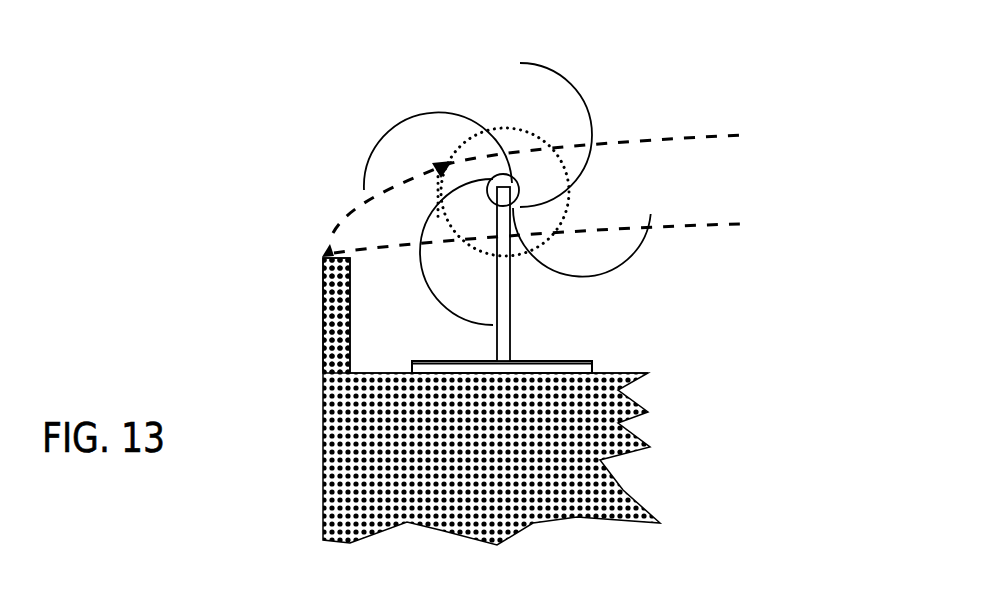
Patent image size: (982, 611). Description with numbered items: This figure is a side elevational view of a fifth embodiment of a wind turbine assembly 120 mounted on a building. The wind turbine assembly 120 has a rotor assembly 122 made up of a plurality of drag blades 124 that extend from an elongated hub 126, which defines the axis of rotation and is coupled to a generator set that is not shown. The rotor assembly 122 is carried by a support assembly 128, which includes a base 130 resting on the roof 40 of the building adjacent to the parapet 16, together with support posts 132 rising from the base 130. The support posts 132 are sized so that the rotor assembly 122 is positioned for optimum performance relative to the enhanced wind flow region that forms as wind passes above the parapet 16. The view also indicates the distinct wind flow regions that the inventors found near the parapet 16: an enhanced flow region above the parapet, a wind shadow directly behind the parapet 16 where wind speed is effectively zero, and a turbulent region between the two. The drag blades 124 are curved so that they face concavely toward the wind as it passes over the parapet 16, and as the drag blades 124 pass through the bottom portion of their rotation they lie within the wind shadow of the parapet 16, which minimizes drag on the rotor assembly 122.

The parapet 16 is at (327, 319).
The roof 40 is at (622, 367).
The wind turbine assembly 120 is at (700, 62).
The rotor assembly 122 is at (645, 192).
The drag blades 124 is at (430, 117).
The elongated hub 126 is at (518, 187).
The support assembly 128 is at (698, 319).
The base 130 is at (585, 356).
The support posts 132 is at (508, 318).